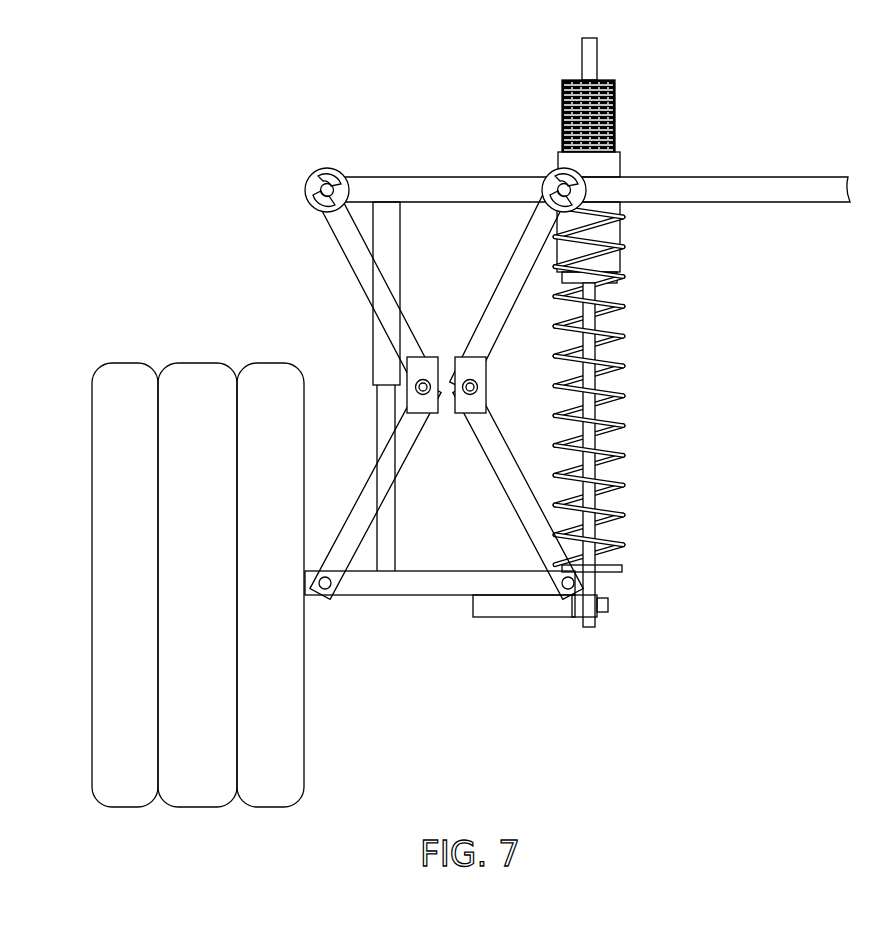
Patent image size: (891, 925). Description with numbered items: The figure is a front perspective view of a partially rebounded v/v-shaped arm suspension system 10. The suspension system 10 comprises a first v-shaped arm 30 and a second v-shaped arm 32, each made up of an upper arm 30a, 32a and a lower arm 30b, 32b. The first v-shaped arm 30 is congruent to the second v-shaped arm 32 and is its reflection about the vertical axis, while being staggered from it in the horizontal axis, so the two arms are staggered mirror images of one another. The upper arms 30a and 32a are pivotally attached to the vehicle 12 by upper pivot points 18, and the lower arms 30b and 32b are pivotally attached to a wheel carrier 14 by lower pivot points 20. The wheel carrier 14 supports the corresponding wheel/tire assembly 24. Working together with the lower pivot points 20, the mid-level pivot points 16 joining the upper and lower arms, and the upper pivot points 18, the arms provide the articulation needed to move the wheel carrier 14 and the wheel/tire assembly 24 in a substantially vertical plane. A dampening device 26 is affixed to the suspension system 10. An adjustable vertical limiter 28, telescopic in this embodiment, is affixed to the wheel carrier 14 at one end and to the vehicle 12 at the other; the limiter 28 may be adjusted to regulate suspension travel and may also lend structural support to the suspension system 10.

The suspension system 10 is at (715, 93).
The vehicle 12 is at (785, 190).
The wheel carrier 14 is at (420, 585).
The mid-level pivot points 16 is at (423, 385).
The upper pivot points 18 is at (577, 193).
The lower pivot points 20 is at (570, 585).
The wheel/tire assembly 24 is at (102, 716).
The dampening device 26 is at (597, 84).
The adjustable vertical limiter 28 is at (388, 238).
The first v-shaped arm 30 is at (375, 390).
The upper arm 30a is at (390, 318).
The lower arm 30b is at (398, 455).
The second v-shaped arm 32 is at (517, 390).
The upper arm 32a is at (520, 275).
The lower arm 32b is at (530, 513).